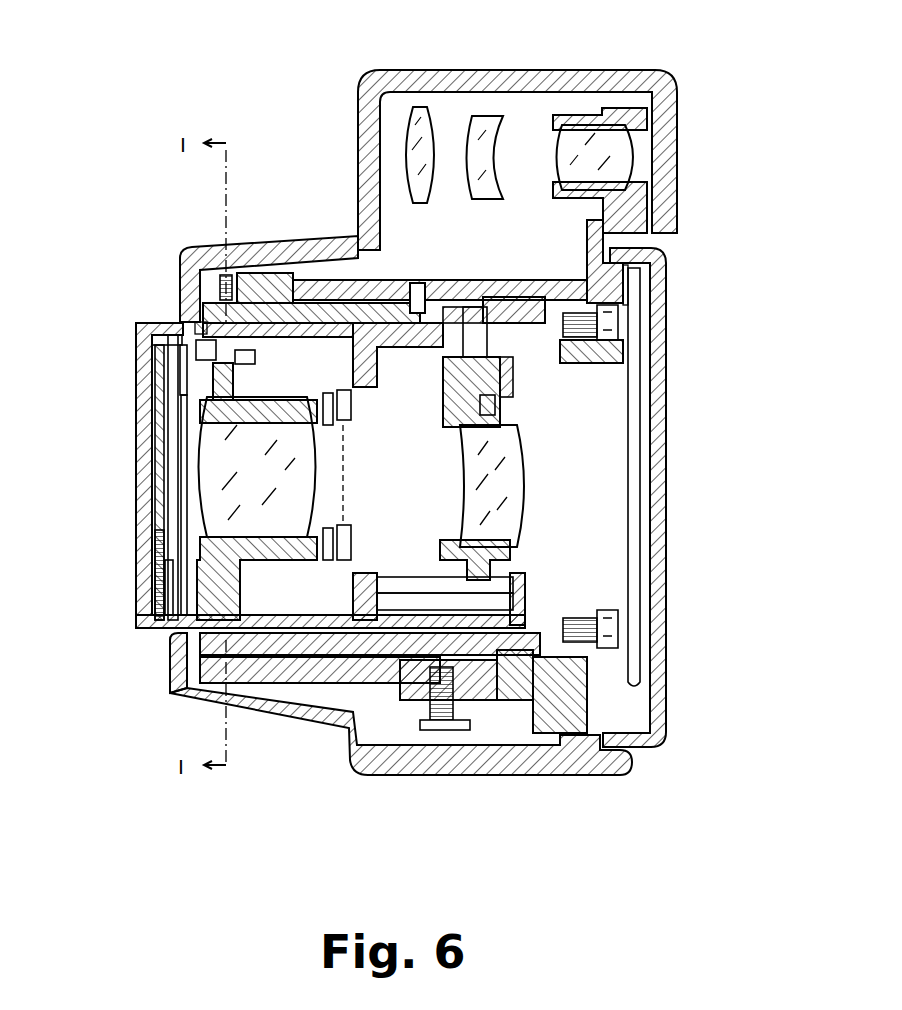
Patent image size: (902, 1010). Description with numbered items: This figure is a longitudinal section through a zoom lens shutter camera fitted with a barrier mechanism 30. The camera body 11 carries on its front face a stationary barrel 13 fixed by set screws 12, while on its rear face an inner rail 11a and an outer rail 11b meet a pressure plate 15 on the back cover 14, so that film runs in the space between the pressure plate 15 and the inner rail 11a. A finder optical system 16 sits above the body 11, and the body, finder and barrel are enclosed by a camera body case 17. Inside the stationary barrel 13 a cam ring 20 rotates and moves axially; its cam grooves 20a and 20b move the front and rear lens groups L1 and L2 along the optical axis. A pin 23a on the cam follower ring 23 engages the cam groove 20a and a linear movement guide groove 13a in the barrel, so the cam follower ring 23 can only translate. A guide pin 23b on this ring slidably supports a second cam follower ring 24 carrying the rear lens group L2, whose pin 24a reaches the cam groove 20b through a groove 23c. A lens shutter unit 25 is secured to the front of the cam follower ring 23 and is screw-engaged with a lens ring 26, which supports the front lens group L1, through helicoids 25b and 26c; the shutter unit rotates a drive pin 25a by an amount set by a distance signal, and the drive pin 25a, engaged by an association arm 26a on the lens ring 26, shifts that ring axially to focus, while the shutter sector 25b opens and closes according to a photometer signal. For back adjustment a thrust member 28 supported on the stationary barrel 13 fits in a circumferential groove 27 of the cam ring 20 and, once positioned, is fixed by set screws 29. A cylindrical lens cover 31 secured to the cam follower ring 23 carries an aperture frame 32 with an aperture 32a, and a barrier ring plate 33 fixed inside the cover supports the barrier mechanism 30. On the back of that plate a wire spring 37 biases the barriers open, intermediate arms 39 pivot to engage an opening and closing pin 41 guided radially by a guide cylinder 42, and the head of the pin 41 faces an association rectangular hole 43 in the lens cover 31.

The camera body 11 is at (612, 275).
The inner rail 11a is at (618, 355).
The outer rail 11b is at (630, 300).
The set screws 12 is at (612, 320).
The stationary barrel 13 is at (232, 262).
The linear movement guide groove 13a is at (268, 280).
The back cover 14 is at (658, 458).
The pressure plate 15 is at (632, 548).
The finder optical system 16 is at (526, 100).
The camera body case 17 is at (535, 768).
The cam ring 20 is at (300, 282).
The cam groove 20a is at (470, 308).
The cam groove 20b is at (490, 305).
The cam follower ring 23 is at (340, 323).
The pin 23a is at (417, 284).
The guide pin 23b is at (378, 370).
The groove 23c is at (538, 377).
The cam follower ring 24 is at (502, 385).
The pin 24a is at (470, 412).
The lens shutter unit 25 is at (158, 345).
The drive pin 25a is at (175, 372).
The shutter sector 25b is at (352, 490).
The lens ring 26 is at (213, 548).
The association arm 26a is at (220, 392).
The helicoid 26c is at (253, 445).
The circumferential groove 27 is at (528, 300).
The thrust member 28 is at (510, 762).
The set screws 29 is at (430, 770).
The barrier mechanism 30 is at (148, 290).
The cylindrical lens cover 31 is at (172, 636).
The aperture frame 32 is at (140, 620).
The aperture 32a is at (178, 440).
The barrier ring plate 33 is at (175, 562).
The wire spring 37 is at (178, 540).
The intermediate arms 39 is at (178, 465).
The opening and closing pin 41 is at (190, 256).
The guide cylinder 42 is at (195, 350).
The association rectangular hole 43 is at (190, 326).
The front lens group L1 is at (192, 497).
The rear lens group L2 is at (518, 530).